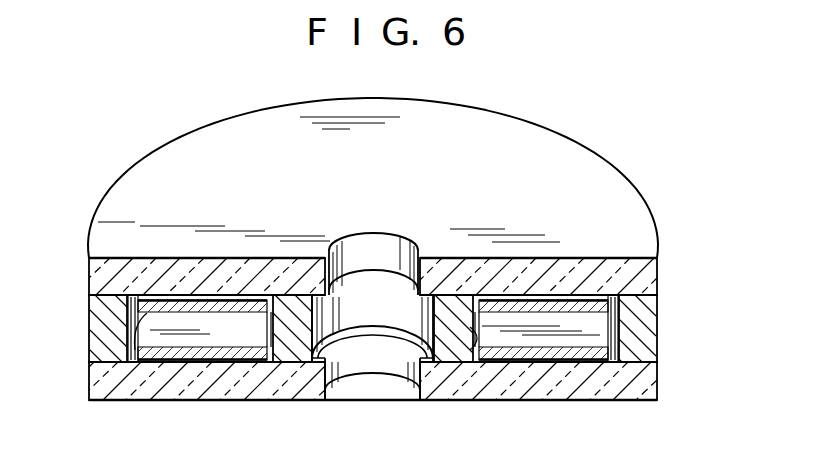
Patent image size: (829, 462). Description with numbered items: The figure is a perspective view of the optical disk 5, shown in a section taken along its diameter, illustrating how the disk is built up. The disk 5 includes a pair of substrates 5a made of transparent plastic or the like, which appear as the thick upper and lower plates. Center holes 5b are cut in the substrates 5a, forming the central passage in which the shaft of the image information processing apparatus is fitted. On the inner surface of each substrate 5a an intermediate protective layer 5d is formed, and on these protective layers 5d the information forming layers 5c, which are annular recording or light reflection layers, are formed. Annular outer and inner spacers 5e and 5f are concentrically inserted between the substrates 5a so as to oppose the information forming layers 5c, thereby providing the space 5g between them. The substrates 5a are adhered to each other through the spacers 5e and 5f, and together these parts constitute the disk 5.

The disk 5 is at (537, 156).
The substrates 5a is at (547, 276).
The center holes 5b is at (405, 258).
The information forming layers 5c is at (160, 300).
The intermediate protective layers 5d is at (240, 293).
The outer spacer 5e is at (92, 333).
The inner spacer 5f is at (300, 353).
The space 5g is at (152, 350).